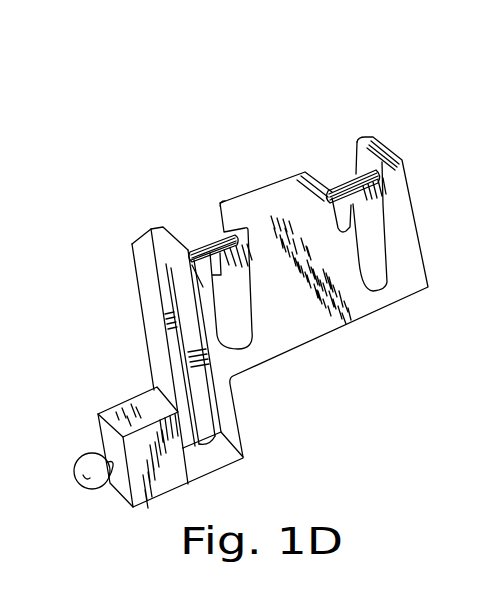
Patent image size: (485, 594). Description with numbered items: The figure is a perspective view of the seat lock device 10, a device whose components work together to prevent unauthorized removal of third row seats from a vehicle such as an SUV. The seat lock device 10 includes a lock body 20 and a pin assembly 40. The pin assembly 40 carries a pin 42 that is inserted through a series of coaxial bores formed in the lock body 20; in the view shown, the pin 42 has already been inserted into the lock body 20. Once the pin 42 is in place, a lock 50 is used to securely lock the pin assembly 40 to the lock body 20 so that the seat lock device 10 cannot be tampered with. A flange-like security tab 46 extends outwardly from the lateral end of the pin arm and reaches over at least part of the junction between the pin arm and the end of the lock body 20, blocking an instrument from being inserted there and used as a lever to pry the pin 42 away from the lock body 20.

The seat lock device 10 is at (335, 107).
The lock body 20 is at (303, 327).
The pin assembly 40 is at (147, 279).
The pin 42 is at (192, 258).
The security tab 46 is at (207, 410).
The lock 50 is at (147, 410).